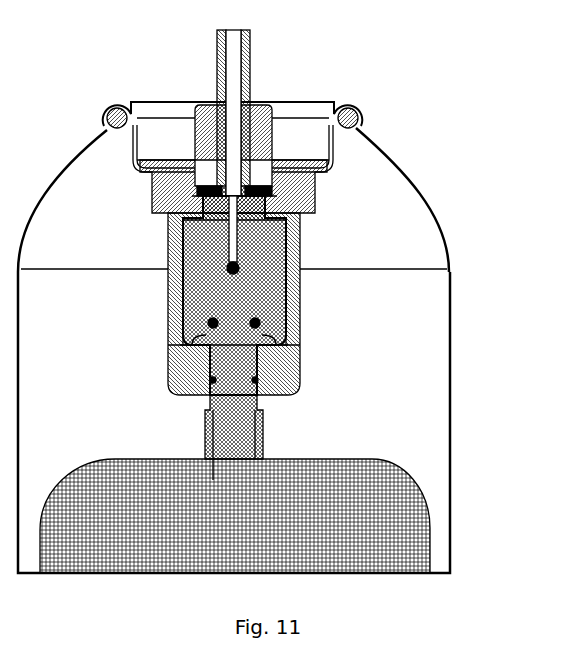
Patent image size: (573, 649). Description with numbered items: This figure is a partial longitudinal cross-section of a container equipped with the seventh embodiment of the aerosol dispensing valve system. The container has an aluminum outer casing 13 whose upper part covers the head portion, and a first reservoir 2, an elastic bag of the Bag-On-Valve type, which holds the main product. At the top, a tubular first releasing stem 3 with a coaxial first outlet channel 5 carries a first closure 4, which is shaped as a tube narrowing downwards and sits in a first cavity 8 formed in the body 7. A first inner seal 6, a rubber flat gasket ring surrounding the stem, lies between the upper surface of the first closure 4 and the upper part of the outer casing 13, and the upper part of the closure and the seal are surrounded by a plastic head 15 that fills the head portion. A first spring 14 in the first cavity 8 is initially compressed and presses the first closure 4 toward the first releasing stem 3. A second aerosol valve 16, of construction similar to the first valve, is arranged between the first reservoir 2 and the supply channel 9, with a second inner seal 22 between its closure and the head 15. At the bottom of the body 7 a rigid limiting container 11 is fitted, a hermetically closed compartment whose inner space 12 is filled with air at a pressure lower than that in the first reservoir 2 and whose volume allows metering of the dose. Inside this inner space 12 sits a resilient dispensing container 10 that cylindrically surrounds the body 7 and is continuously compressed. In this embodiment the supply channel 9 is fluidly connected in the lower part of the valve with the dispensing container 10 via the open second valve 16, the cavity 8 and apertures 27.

The first reservoir 2 is at (112, 459).
The first releasing stem 3 is at (255, 73).
The first closure 4 is at (152, 203).
The first outlet channel 5 is at (232, 52).
The first inner seal 6 is at (266, 190).
The body 7 is at (202, 300).
The first cavity 8 is at (300, 307).
The supply channel 9 is at (247, 437).
The dispensing container 10 is at (302, 333).
The rigid limiting container 11 is at (302, 346).
The inner space 12 is at (300, 225).
The outer casing 13 is at (340, 143).
The first spring 14 is at (170, 358).
The head 15 is at (198, 140).
The second aerosol valve 16 is at (168, 337).
The second inner seal 22 is at (300, 320).
The apertures 27 is at (170, 322).